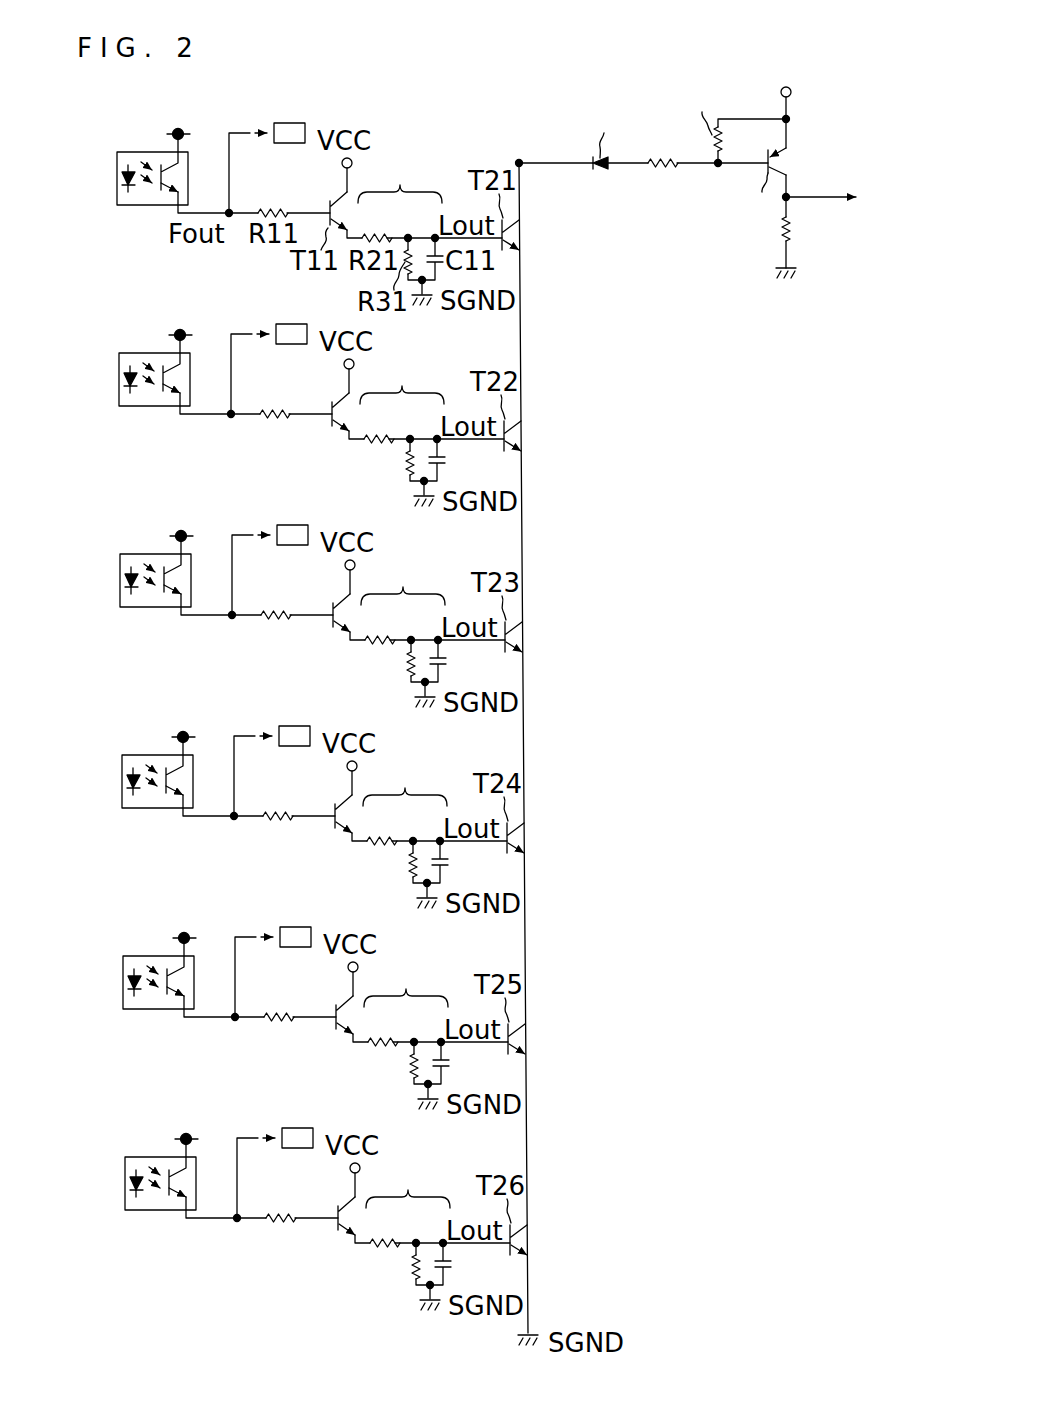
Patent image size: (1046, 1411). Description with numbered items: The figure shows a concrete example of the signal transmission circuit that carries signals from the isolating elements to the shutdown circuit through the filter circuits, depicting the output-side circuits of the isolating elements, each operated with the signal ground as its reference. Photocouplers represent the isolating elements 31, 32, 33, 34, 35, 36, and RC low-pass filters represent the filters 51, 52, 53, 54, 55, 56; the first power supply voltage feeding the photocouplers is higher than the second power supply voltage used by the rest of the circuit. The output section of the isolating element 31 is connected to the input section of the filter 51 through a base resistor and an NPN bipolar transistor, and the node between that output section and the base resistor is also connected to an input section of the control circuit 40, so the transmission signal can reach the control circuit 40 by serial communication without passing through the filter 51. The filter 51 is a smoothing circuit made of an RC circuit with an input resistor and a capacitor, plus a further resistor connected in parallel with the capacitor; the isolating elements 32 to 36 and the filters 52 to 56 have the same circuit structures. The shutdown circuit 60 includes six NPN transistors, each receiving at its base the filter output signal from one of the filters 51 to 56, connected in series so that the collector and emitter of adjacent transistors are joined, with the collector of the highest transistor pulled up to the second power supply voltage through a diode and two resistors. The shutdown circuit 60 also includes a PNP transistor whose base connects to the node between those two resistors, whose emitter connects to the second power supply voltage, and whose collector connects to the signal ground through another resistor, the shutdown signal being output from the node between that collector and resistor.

The isolating element 31 is at (130, 150).
The isolating element 32 is at (175, 356).
The isolating element 33 is at (176, 557).
The isolating element 34 is at (178, 758).
The isolating element 35 is at (179, 959).
The isolating element 36 is at (181, 1160).
The control circuit 40 is at (291, 121).
The filter 51 is at (430, 231).
The filter 52 is at (432, 432).
The filter 53 is at (433, 633).
The filter 54 is at (435, 834).
The filter 55 is at (436, 1035).
The filter 56 is at (438, 1236).
The shutdown circuit 60 is at (920, 65).